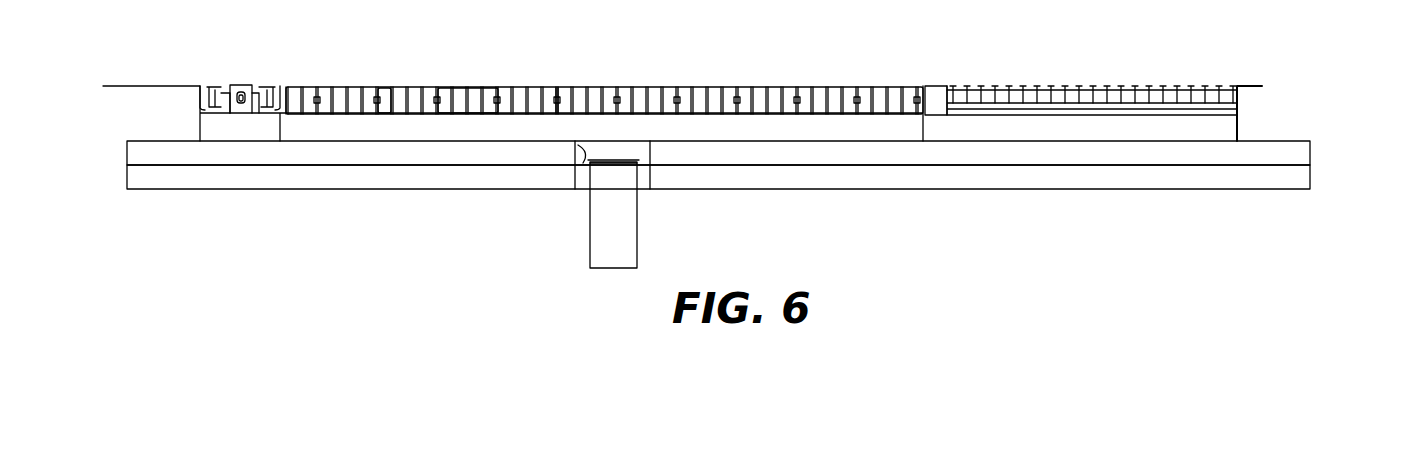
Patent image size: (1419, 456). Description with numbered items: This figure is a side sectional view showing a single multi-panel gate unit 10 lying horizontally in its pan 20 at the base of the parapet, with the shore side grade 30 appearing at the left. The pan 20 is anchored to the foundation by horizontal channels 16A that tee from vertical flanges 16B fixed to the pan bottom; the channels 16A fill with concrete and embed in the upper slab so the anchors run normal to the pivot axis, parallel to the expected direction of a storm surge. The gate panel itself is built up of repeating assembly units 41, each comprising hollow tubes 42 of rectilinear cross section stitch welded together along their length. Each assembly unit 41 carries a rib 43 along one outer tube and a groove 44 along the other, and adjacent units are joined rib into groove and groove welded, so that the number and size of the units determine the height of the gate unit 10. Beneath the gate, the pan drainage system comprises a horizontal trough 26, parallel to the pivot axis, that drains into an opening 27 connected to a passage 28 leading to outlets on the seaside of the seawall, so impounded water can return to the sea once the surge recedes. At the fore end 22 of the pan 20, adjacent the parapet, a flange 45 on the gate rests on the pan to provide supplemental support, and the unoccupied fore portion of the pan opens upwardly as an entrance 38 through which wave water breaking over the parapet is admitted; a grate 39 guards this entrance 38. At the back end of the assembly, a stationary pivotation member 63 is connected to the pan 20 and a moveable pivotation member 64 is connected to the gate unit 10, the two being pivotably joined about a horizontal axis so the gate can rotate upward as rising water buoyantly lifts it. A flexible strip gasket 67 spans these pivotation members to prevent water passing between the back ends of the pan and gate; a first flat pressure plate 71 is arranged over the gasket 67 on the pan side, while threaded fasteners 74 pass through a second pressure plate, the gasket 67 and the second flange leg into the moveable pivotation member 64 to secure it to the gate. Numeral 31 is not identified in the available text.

The multi-panel gate unit 10 is at (775, 73).
The horizontal channels 16A is at (1300, 180).
The vertical flanges 16B is at (1300, 152).
The pan 20 is at (1128, 47).
The fore end 22 is at (1247, 125).
The trough 26 is at (585, 160).
The opening 27 is at (623, 160).
The passage 28 is at (622, 222).
The shore side grade 30 is at (114, 85).
The cell array frame 31 is at (838, 85).
The entrance 38 is at (1032, 108).
The grate 39 is at (1062, 88).
The assembly unit 41 is at (500, 80).
The hollow tube 42 is at (385, 85).
The rib 43 is at (559, 100).
The groove 44 is at (556, 100).
The flange 45 is at (930, 85).
The stationary pivotation member 63 is at (220, 100).
The moveable pivotation member 64 is at (262, 100).
The flexible strip gasket 67 is at (241, 85).
The first flat pressure plate 71 is at (216, 85).
The threaded fasteners 74 is at (270, 85).